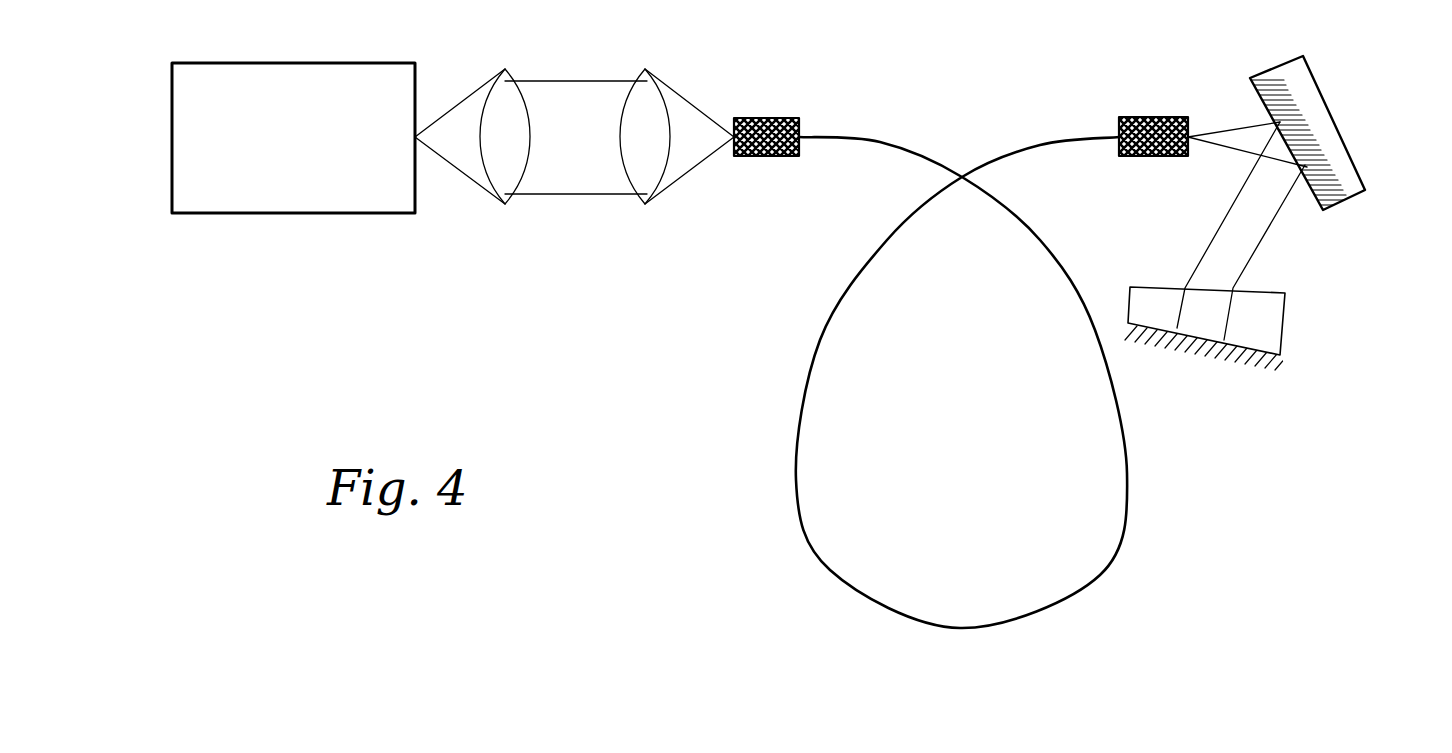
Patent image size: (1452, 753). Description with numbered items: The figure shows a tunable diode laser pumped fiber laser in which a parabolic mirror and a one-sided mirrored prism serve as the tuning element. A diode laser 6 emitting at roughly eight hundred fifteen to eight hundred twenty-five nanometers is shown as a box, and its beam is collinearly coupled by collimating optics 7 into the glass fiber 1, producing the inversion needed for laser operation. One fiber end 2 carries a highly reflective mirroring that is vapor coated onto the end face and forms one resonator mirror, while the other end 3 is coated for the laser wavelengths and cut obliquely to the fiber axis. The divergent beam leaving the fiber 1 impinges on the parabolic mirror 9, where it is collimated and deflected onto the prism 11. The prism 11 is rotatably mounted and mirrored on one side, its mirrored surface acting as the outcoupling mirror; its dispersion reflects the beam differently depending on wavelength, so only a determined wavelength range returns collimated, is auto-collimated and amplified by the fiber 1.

The glass fiber 1 is at (885, 240).
The fiber end 2 is at (733, 120).
The other end of the glass fiber 3 is at (1190, 119).
The diode laser 6 is at (247, 197).
The collimating optics 7 is at (643, 213).
The parabolic mirror 9 is at (1345, 137).
The prism 11 is at (1285, 328).